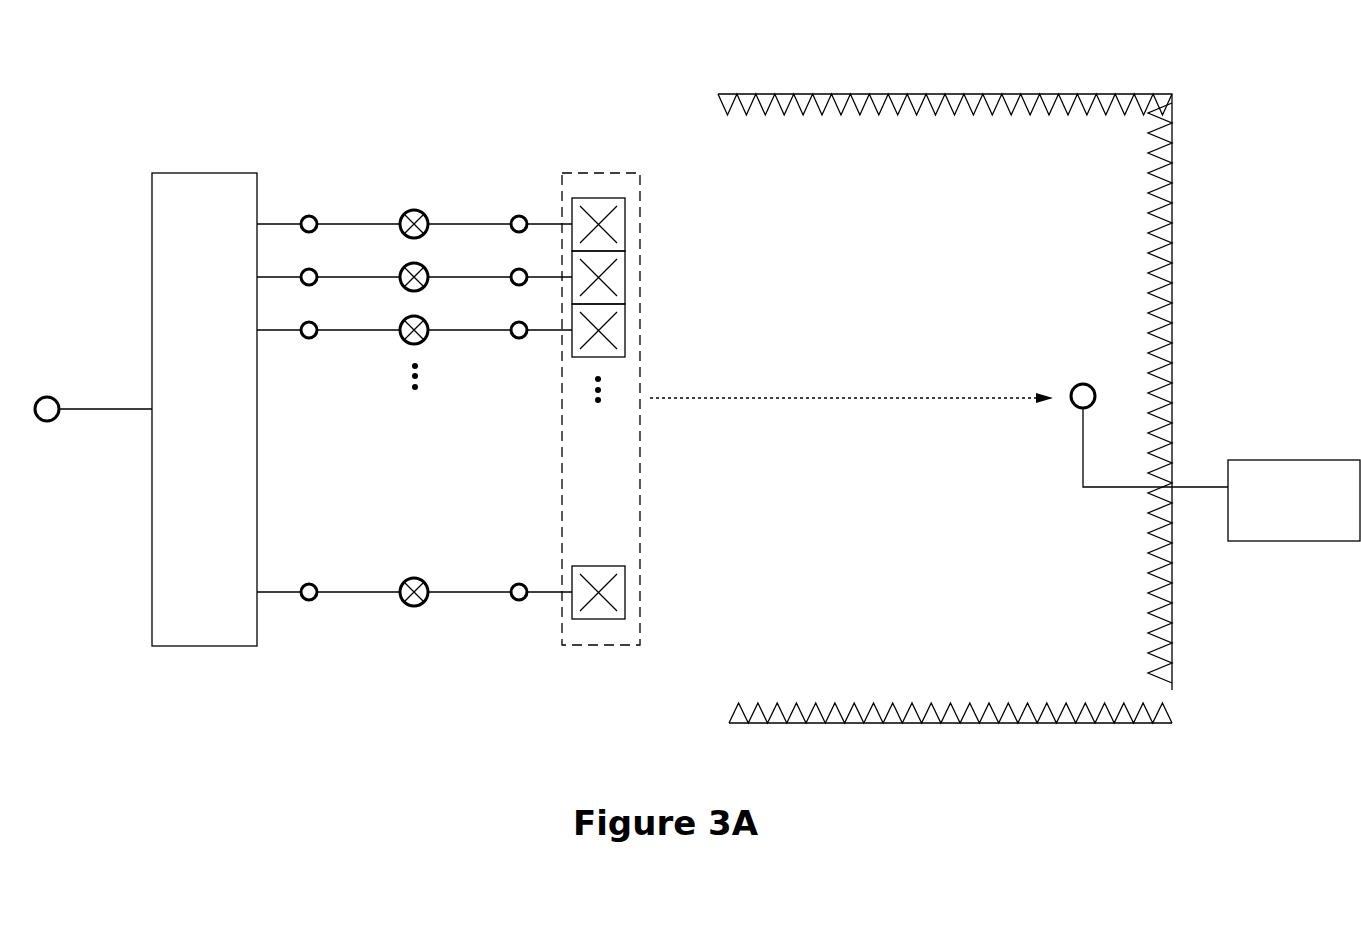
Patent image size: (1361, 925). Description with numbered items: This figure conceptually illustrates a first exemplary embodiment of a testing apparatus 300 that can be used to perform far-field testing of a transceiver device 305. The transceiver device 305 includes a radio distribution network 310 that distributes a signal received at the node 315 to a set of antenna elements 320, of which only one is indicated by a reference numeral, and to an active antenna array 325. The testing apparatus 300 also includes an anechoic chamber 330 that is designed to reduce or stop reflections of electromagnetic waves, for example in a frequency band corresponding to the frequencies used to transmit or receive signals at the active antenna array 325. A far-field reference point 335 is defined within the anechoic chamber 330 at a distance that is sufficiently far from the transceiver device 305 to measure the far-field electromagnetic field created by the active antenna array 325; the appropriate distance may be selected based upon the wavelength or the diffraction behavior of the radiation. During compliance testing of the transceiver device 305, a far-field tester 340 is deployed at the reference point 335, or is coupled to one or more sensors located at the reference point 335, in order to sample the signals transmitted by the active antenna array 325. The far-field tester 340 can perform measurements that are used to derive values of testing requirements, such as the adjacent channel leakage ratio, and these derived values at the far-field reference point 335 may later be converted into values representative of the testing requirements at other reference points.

The testing apparatus 300 is at (1210, 64).
The transceiver device 305 is at (252, 110).
The radio distribution network 310 is at (557, 660).
The node 315 is at (47, 393).
The antenna element 320 is at (627, 217).
The active antenna array 325 is at (586, 172).
The anechoic chamber 330 is at (1025, 723).
The far-field reference point 335 is at (1087, 383).
The far-field tester 340 is at (1294, 500).